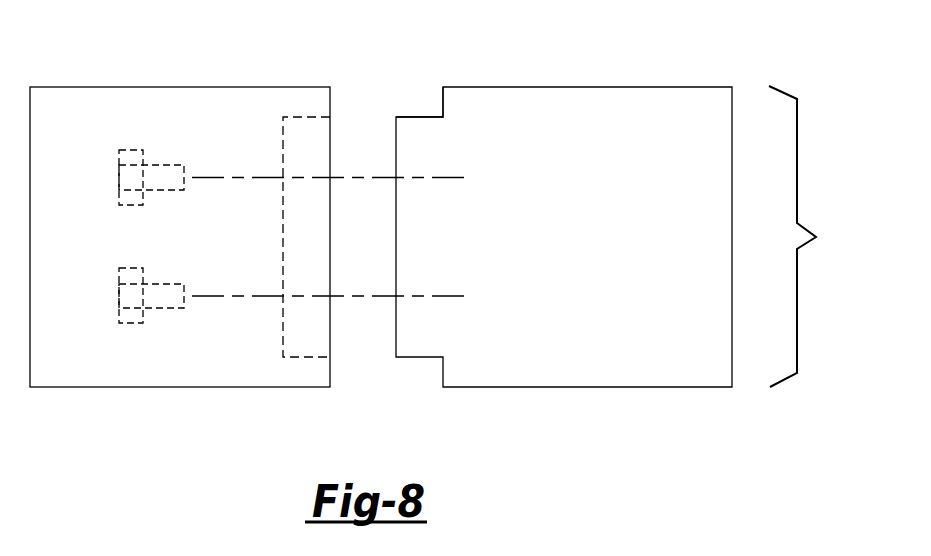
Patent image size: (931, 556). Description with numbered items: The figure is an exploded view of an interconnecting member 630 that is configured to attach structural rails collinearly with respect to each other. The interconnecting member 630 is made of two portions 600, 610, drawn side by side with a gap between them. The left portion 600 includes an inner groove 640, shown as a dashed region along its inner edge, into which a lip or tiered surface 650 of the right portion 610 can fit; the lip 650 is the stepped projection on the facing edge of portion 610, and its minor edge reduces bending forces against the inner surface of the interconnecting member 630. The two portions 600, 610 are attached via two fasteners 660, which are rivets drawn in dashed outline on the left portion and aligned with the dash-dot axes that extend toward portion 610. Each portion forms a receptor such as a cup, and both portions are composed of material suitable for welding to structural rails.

The portion 600 is at (187, 87).
The portion 610 is at (588, 87).
The interconnecting member 630 is at (812, 236).
The inner groove 640 is at (306, 117).
The lip or tiered surface 650 is at (417, 117).
The fasteners 660 is at (118, 178).